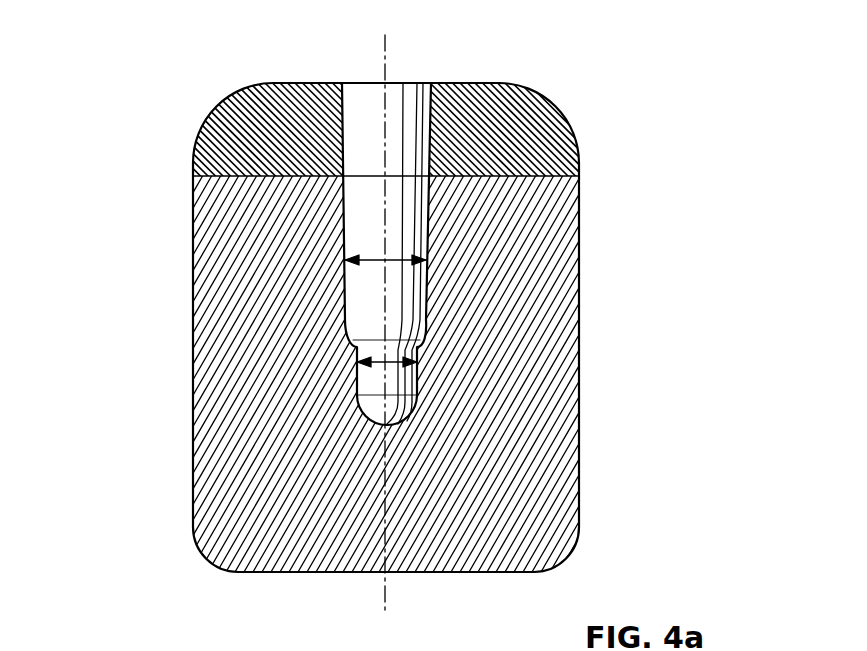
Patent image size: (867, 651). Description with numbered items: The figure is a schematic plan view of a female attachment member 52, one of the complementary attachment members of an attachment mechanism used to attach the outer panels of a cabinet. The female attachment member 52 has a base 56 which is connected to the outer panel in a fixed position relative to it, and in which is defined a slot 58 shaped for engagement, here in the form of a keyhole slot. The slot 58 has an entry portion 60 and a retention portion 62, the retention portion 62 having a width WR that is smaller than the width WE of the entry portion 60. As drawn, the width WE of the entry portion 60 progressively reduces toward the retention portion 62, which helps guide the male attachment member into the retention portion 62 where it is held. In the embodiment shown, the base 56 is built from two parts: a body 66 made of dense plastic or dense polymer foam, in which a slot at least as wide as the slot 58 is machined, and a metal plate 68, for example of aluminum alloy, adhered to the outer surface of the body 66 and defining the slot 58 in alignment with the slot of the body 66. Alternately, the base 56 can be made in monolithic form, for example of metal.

The female attachment member 52 is at (200, 47).
The base 56 is at (527, 137).
The slot 58 is at (408, 110).
The entry portion 60 is at (410, 237).
The retention portion 62 is at (410, 387).
The body 66 is at (472, 118).
The metal plate 68 is at (563, 452).
The width of the entry portion WE is at (373, 258).
The width of the retention portion WR is at (381, 361).